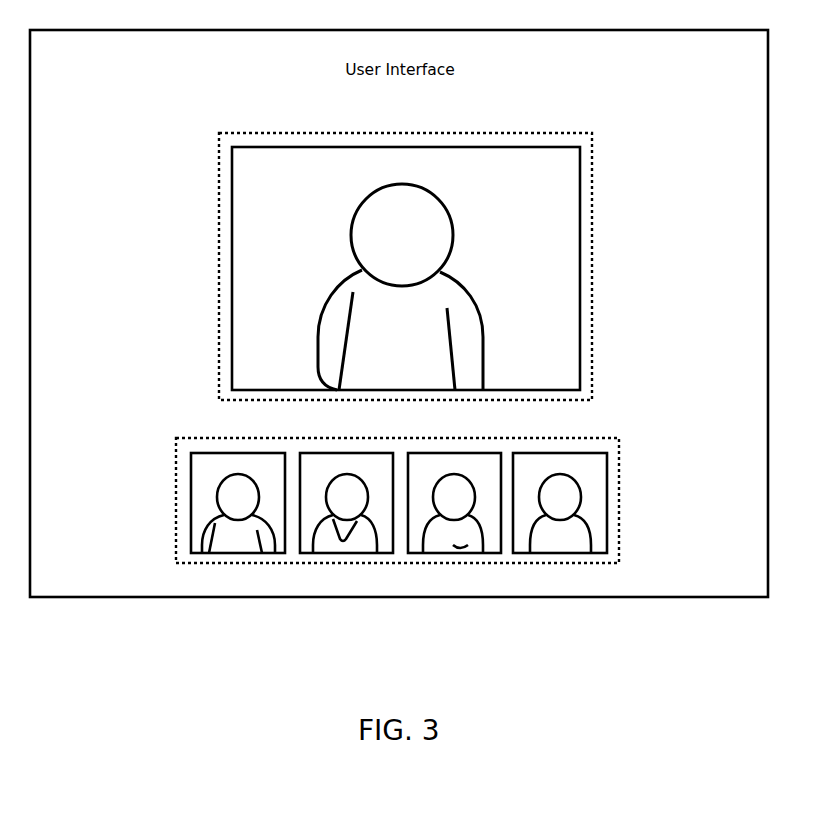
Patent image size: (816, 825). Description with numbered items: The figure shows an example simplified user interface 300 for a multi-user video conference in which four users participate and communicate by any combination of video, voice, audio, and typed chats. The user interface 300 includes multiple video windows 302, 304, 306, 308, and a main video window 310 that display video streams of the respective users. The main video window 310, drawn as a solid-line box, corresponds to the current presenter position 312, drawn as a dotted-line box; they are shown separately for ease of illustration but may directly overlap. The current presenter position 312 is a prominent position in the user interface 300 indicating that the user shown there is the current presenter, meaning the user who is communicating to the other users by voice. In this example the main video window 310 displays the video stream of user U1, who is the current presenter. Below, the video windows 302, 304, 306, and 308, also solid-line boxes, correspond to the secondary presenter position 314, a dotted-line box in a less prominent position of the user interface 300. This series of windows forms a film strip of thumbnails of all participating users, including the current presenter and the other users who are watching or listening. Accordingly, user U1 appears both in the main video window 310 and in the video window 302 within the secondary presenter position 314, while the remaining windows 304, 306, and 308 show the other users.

The user interface 300 is at (416, 676).
The video window 302 is at (202, 452).
The video window 304 is at (310, 452).
The video window 306 is at (418, 452).
The video window 308 is at (525, 452).
The main video window 310 is at (283, 143).
The current presenter position 312 is at (426, 133).
The secondary presenter position 314 is at (618, 437).
The user U1 is at (450, 214).